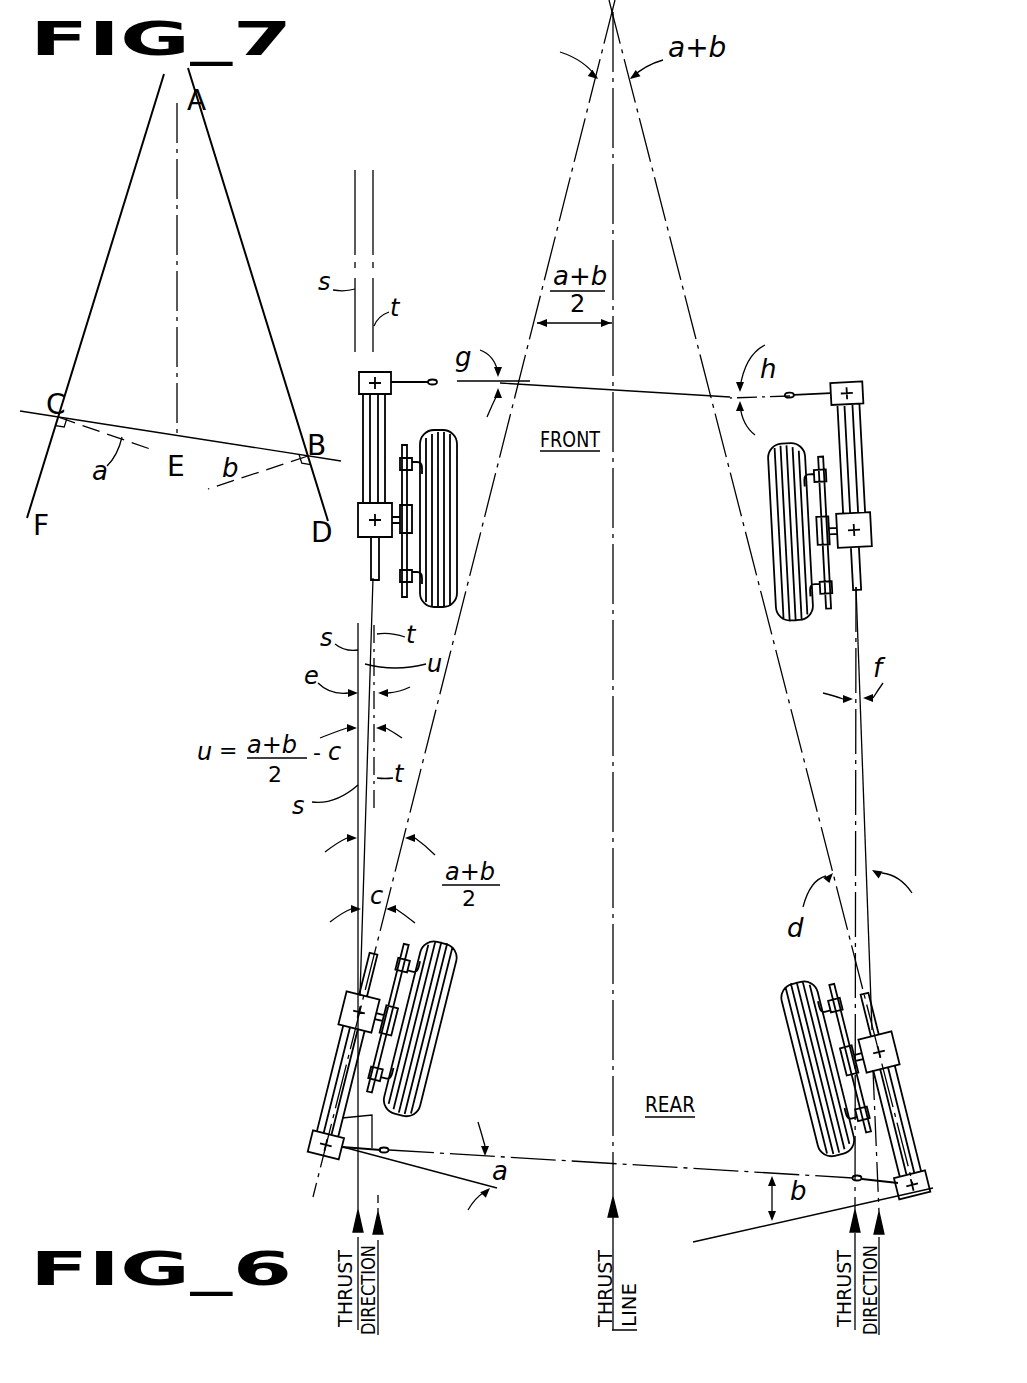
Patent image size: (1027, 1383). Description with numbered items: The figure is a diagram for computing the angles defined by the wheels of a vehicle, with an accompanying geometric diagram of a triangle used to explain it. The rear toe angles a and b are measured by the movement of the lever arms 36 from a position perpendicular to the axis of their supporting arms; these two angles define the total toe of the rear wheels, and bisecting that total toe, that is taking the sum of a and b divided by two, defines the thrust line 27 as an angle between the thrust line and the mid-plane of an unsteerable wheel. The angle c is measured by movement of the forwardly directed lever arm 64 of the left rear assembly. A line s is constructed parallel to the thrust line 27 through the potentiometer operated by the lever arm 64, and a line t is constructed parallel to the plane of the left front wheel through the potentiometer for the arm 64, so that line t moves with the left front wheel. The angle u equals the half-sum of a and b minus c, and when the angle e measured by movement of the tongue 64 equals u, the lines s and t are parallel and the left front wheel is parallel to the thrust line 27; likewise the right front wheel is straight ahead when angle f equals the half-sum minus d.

The thrust line 27 is at (616, 740).
The lever arm 36 is at (378, 1146).
The forwardly directed lever arm 64 is at (370, 556).